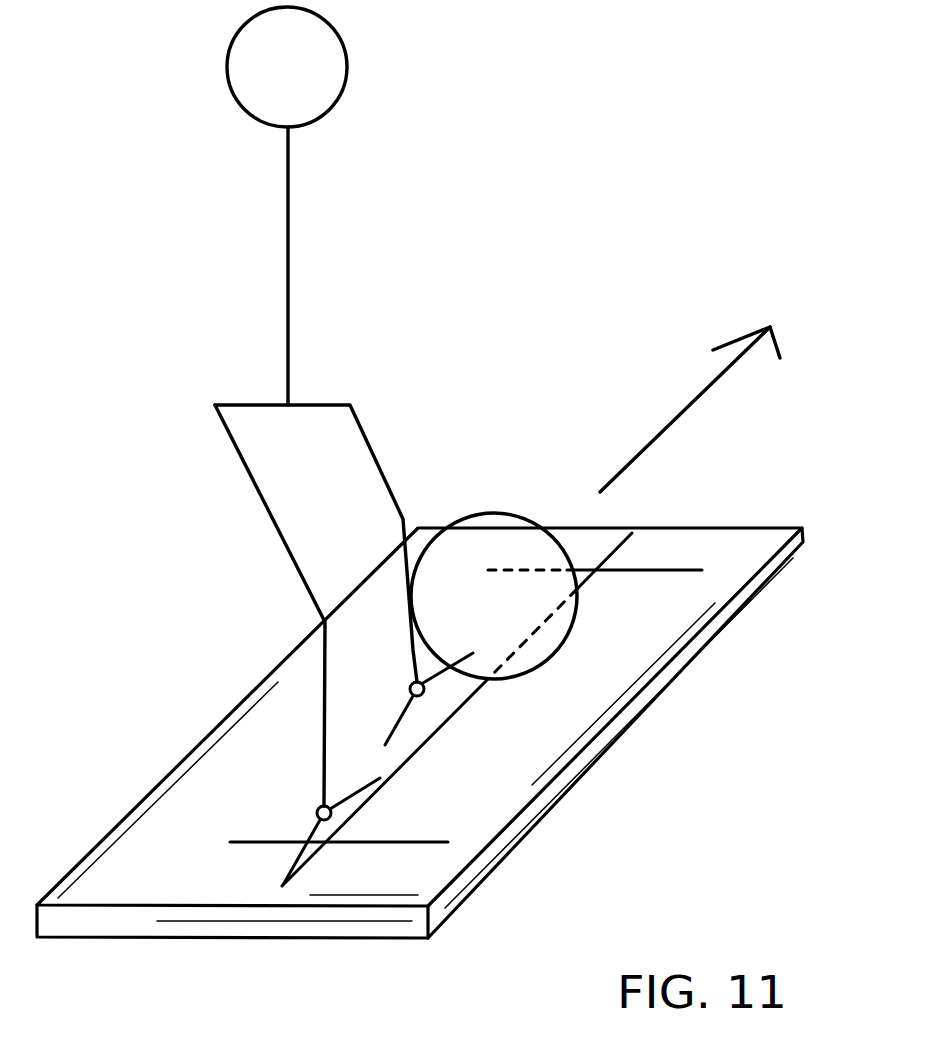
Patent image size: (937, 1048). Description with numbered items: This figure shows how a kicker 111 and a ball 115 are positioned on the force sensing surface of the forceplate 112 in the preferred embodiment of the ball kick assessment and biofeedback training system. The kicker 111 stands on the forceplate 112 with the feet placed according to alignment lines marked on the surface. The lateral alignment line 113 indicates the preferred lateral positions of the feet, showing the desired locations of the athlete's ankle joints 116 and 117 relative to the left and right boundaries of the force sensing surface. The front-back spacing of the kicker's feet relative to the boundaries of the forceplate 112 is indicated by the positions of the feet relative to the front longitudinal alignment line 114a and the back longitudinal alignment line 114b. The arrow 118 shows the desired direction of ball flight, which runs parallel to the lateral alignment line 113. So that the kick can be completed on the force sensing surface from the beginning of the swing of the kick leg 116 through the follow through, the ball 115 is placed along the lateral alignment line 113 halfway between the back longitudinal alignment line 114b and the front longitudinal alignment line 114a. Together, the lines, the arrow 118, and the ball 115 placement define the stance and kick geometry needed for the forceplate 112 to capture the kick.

The kicker 111 is at (290, 288).
The forceplate 112 is at (90, 852).
The lateral alignment line 113 is at (287, 879).
The front longitudinal alignment line 114a is at (660, 568).
The back longitudinal alignment line 114b is at (388, 840).
The ball 115 is at (483, 513).
The ankle joint 116 is at (412, 684).
The ankle joint 117 is at (318, 807).
The arrow 118 is at (687, 400).